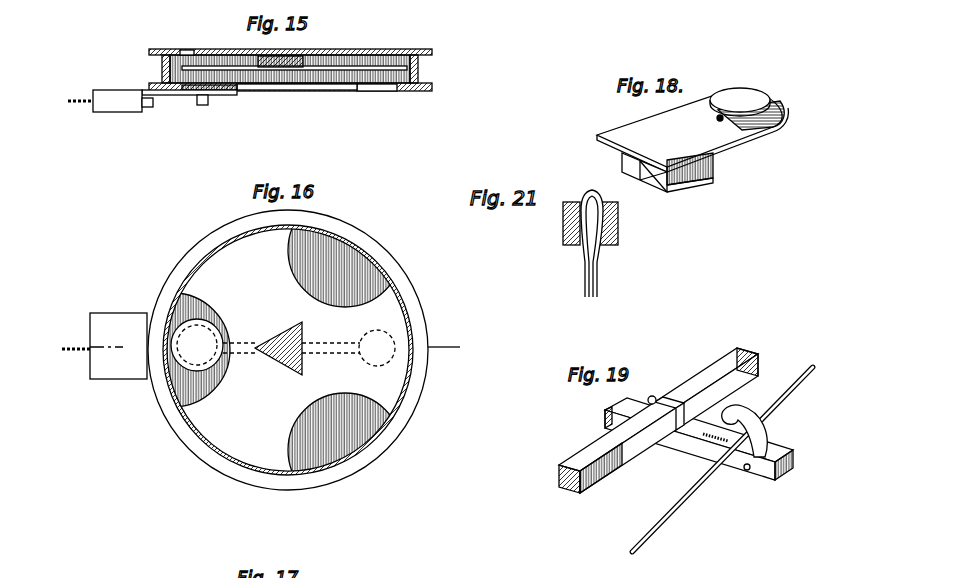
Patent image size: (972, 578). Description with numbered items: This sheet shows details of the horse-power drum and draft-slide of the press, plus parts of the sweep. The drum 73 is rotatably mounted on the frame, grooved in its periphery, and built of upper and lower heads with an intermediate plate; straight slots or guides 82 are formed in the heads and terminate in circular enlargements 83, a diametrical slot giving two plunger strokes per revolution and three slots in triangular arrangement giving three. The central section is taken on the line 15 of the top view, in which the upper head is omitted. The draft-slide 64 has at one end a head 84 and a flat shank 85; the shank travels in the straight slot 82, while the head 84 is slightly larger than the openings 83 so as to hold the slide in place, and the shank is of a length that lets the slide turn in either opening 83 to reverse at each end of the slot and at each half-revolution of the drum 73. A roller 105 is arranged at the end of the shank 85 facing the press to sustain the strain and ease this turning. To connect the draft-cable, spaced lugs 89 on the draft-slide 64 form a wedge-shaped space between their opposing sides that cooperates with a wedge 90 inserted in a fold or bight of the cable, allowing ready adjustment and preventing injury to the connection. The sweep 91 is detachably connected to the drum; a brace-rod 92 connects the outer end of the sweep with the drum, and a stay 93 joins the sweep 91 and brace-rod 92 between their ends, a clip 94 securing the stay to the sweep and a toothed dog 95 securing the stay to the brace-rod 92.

In FIG. 16, the section line 15 is at (263, 347).
In FIG. 15, the draft-slide 64 is at (115, 90).
In FIG. 16, the draft-slide 64 is at (104, 346).
In FIG. 18, the draft-slide 64 is at (692, 130).
In FIG. 15, the drum 73 is at (349, 50).
In FIG. 16, the drum 73 is at (272, 350).
In FIG. 15, the straight slot 82 is at (370, 46).
In FIG. 15, the circular enlargement 83 is at (190, 52).
In FIG. 15, the head 84 is at (240, 89).
In FIG. 16, the head 84 is at (197, 345).
In FIG. 18, the head 84 is at (740, 102).
In FIG. 15, the flat shank 85 is at (198, 95).
In FIG. 18, the flat shank 85 is at (718, 121).
In FIG. 15, the spaced lugs 89 is at (112, 105).
In FIG. 18, the spaced lugs 89 is at (622, 160).
In FIG. 21, the spaced lugs 89 is at (562, 232).
In FIG. 21, the wedge 90 is at (600, 193).
In FIG. 19, the sweep 91 is at (577, 460).
In FIG. 19, the brace-rod 92 is at (684, 499).
In FIG. 19, the stay 93 is at (688, 450).
In FIG. 19, the clip 94 is at (660, 396).
In FIG. 19, the toothed dog 95 is at (744, 411).
In FIG. 18, the roller 105 is at (720, 120).